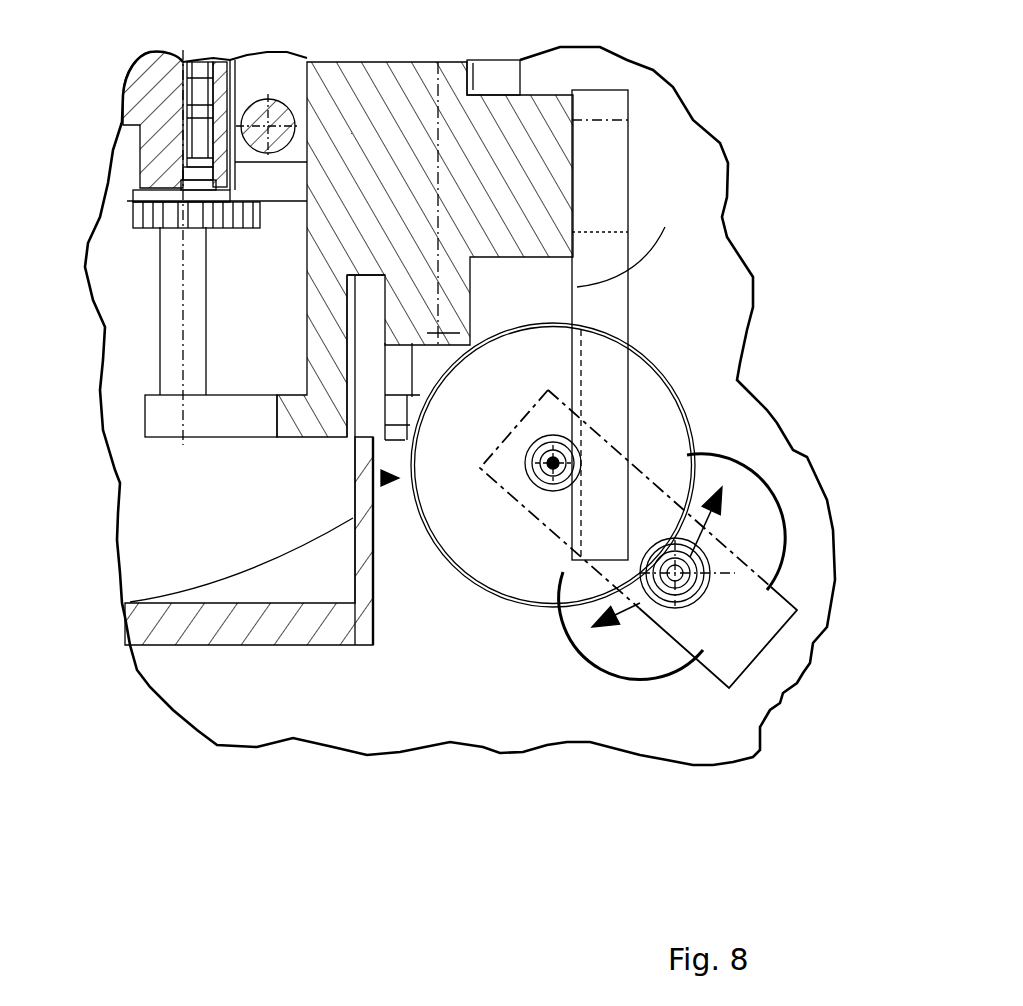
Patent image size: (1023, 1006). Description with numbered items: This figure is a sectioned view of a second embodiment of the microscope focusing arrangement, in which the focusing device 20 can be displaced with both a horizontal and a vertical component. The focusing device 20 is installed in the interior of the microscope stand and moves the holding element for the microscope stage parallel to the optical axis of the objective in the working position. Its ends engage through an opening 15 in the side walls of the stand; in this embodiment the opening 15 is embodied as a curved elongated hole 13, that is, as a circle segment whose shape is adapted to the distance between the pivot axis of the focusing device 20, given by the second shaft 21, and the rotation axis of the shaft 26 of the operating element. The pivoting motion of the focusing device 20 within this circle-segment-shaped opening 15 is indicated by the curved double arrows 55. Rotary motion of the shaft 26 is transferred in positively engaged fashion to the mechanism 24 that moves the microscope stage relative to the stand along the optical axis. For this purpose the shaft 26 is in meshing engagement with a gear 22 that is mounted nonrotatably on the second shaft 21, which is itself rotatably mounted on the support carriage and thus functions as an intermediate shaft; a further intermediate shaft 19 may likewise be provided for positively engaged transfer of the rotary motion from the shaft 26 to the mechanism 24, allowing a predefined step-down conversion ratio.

The curved elongated hole 13 is at (655, 653).
The opening 15 is at (787, 535).
The intermediate shaft 19 is at (563, 450).
The focusing device 20 is at (384, 478).
The second shaft 21 is at (527, 467).
The gear 22 is at (498, 550).
The mechanism 24 is at (413, 88).
The shaft 26 is at (753, 677).
The curved double arrows 55 is at (707, 530).